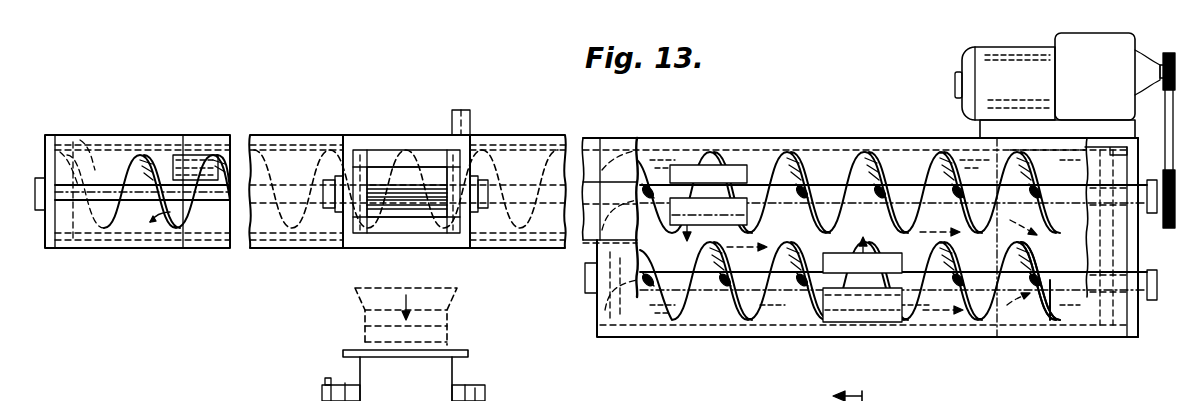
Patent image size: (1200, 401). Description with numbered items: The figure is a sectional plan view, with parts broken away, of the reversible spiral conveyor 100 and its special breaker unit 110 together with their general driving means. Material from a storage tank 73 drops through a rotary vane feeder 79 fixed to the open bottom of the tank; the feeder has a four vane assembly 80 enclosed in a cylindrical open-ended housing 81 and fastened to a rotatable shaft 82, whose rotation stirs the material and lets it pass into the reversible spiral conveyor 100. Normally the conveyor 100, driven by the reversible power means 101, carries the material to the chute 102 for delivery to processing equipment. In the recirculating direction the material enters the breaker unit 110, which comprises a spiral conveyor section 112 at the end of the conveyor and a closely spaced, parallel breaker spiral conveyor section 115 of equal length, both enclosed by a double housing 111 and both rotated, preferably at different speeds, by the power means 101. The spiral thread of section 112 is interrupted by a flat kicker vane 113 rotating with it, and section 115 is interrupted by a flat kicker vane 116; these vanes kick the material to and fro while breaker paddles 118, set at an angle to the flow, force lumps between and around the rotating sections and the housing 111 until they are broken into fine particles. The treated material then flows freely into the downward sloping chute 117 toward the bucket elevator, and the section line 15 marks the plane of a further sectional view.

The section line 15- 15 is at (861, 394).
The storage tank 73 is at (365, 300).
The rotary vane feeder 79 is at (420, 130).
The vane assembly 80 is at (380, 175).
The cylindrical open-ended housing 81 is at (392, 218).
The rotatable shaft 82 is at (413, 200).
The reversible spiral conveyor 100 is at (185, 258).
The reversible power means 101 is at (1157, 50).
The chute 102 is at (165, 165).
The breaker unit 110 is at (945, 352).
The double housing 111 is at (700, 318).
The spiral conveyor section 112 is at (135, 160).
The flat kicker vane 113 is at (708, 172).
The breaker spiral conveyor section 115 is at (762, 320).
The flat kicker vane 116 is at (850, 300).
The downward sloping chute 117 is at (1015, 318).
The breaker paddles 118 is at (808, 196).